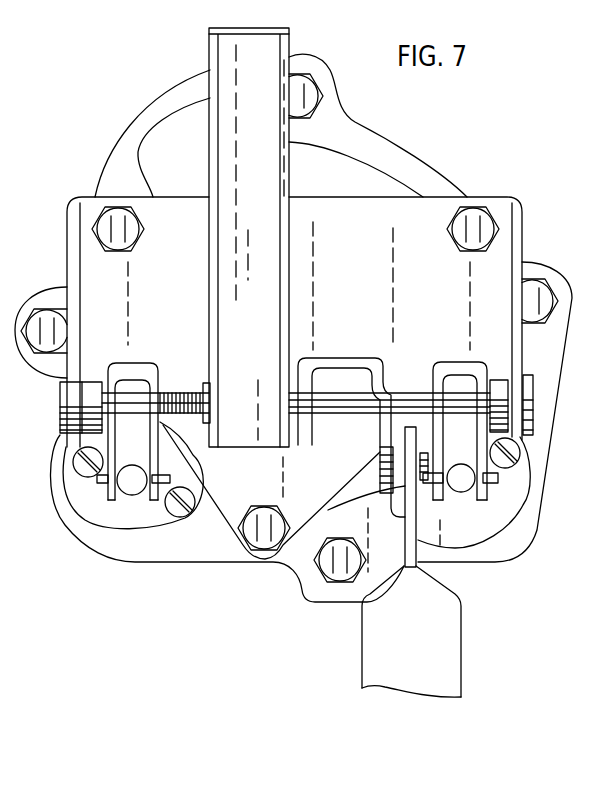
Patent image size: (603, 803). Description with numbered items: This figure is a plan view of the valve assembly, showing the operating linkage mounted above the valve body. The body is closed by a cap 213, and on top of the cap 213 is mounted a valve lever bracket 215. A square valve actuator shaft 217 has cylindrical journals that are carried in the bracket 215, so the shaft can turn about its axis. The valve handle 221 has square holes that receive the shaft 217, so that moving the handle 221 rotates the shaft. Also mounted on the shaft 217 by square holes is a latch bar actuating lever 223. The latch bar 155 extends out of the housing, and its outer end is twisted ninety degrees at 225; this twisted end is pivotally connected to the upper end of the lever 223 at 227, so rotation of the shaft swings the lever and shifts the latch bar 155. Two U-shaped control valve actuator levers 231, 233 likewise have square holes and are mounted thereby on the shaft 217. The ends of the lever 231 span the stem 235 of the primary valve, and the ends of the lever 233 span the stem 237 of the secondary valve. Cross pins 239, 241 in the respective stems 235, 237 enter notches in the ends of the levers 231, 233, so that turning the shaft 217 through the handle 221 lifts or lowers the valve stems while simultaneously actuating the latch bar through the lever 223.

The latch bar 155 is at (452, 649).
The cap 213 is at (423, 157).
The valve lever bracket 215 is at (502, 240).
The valve actuator shaft 217 is at (328, 424).
The valve handle 221 is at (290, 40).
The latch bar actuating lever 223 is at (380, 447).
The twisted end of latch bar 225 is at (418, 563).
The pivotal connection 227 is at (389, 481).
The control valve actuator lever 231 is at (145, 372).
The control valve actuator lever 233 is at (438, 372).
The primary valve stem 235 is at (128, 491).
The secondary valve stem 237 is at (458, 492).
The cross pin 239 is at (98, 478).
The cross pin 241 is at (498, 480).